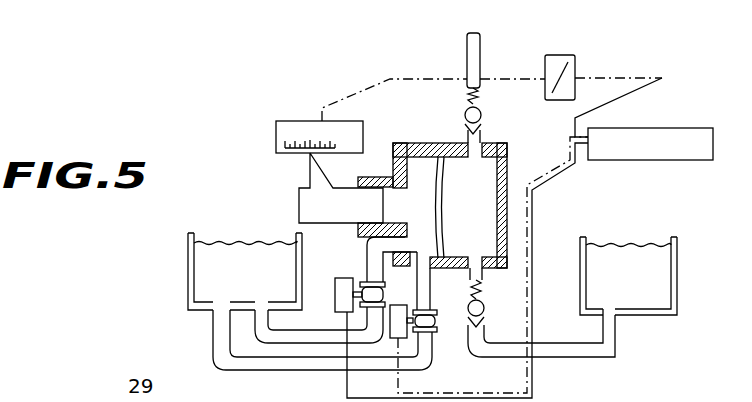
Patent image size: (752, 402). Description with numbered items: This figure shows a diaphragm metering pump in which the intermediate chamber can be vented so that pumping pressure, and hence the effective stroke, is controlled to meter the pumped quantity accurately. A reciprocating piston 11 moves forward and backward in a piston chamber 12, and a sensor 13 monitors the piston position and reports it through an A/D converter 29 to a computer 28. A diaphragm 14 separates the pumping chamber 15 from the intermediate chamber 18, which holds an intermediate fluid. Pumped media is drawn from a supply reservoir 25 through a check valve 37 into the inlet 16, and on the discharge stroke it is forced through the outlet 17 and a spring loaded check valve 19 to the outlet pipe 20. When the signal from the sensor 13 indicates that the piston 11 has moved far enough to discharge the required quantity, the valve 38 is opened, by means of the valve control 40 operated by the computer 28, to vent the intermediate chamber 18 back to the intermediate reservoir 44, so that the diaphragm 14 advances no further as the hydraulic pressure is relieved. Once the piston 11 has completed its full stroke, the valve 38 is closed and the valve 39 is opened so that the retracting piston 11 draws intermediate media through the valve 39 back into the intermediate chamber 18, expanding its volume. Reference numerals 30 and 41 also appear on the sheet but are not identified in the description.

The piston 11 is at (336, 214).
The piston chamber 12 is at (390, 183).
The sensor 13 is at (363, 132).
The diaphragm 14 is at (436, 222).
The pumping chamber 15 is at (482, 222).
The inlet 16 is at (484, 247).
The outlet 17 is at (472, 156).
The intermediate chamber 18 is at (432, 181).
The spring loaded check valve 19 is at (482, 128).
The outlet pipe 20 is at (467, 52).
The pumping media supply reservoir 25 is at (650, 286).
The computer 28 is at (625, 160).
The A/D converter 29 is at (560, 55).
The control line 30 is at (92, 2).
The check valve 37 is at (484, 318).
The valve 38 is at (437, 322).
The valve 39 is at (388, 272).
The valve control 40 is at (338, 292).
The second valve actuator 41 is at (397, 338).
The intermediate reservoir 44 is at (266, 288).